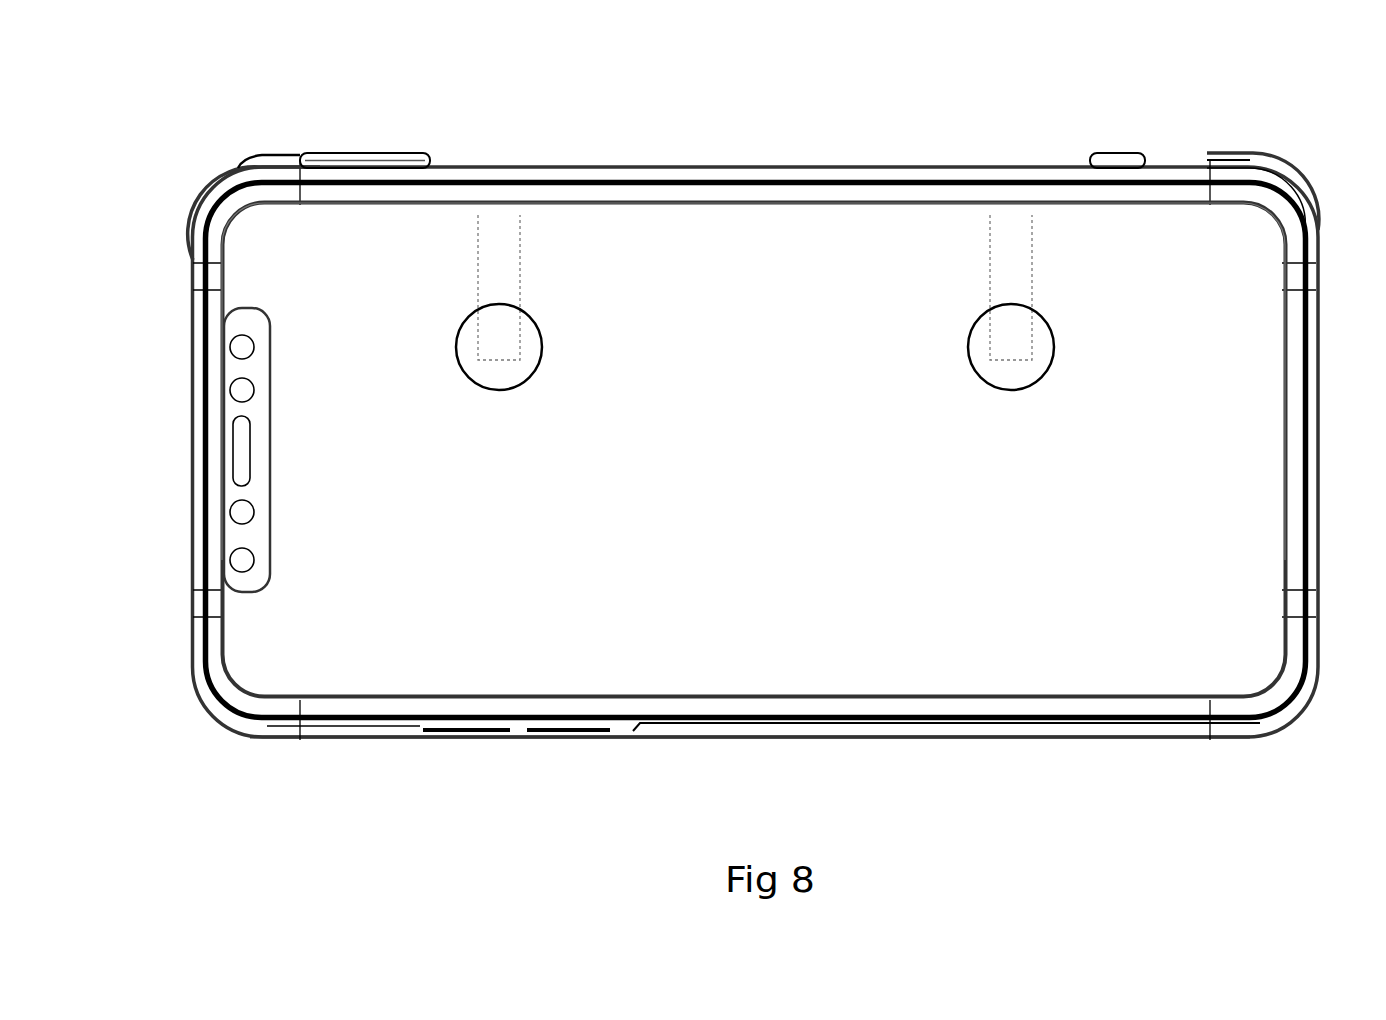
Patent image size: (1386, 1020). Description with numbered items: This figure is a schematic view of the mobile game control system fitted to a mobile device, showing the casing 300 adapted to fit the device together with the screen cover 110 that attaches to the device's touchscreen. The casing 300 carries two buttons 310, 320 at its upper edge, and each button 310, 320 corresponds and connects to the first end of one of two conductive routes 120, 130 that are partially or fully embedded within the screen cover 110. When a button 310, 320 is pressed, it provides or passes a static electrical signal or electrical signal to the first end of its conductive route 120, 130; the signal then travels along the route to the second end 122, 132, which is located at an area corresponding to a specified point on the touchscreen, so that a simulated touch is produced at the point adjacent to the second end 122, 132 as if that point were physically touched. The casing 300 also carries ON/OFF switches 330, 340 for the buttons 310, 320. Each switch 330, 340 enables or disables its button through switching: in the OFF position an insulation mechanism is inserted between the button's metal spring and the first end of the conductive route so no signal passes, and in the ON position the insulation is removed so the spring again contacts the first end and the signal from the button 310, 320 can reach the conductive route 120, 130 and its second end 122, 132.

The screen cover 110 is at (645, 560).
The conductive route 120 is at (382, 213).
The second end 122 is at (498, 305).
The conductive route 130 is at (1082, 207).
The second end 132 is at (1010, 305).
The casing 300 is at (987, 728).
The button 310 is at (262, 153).
The button 320 is at (1253, 155).
The ON/OFF switch 330 is at (382, 155).
The ON/OFF switch 340 is at (1132, 155).